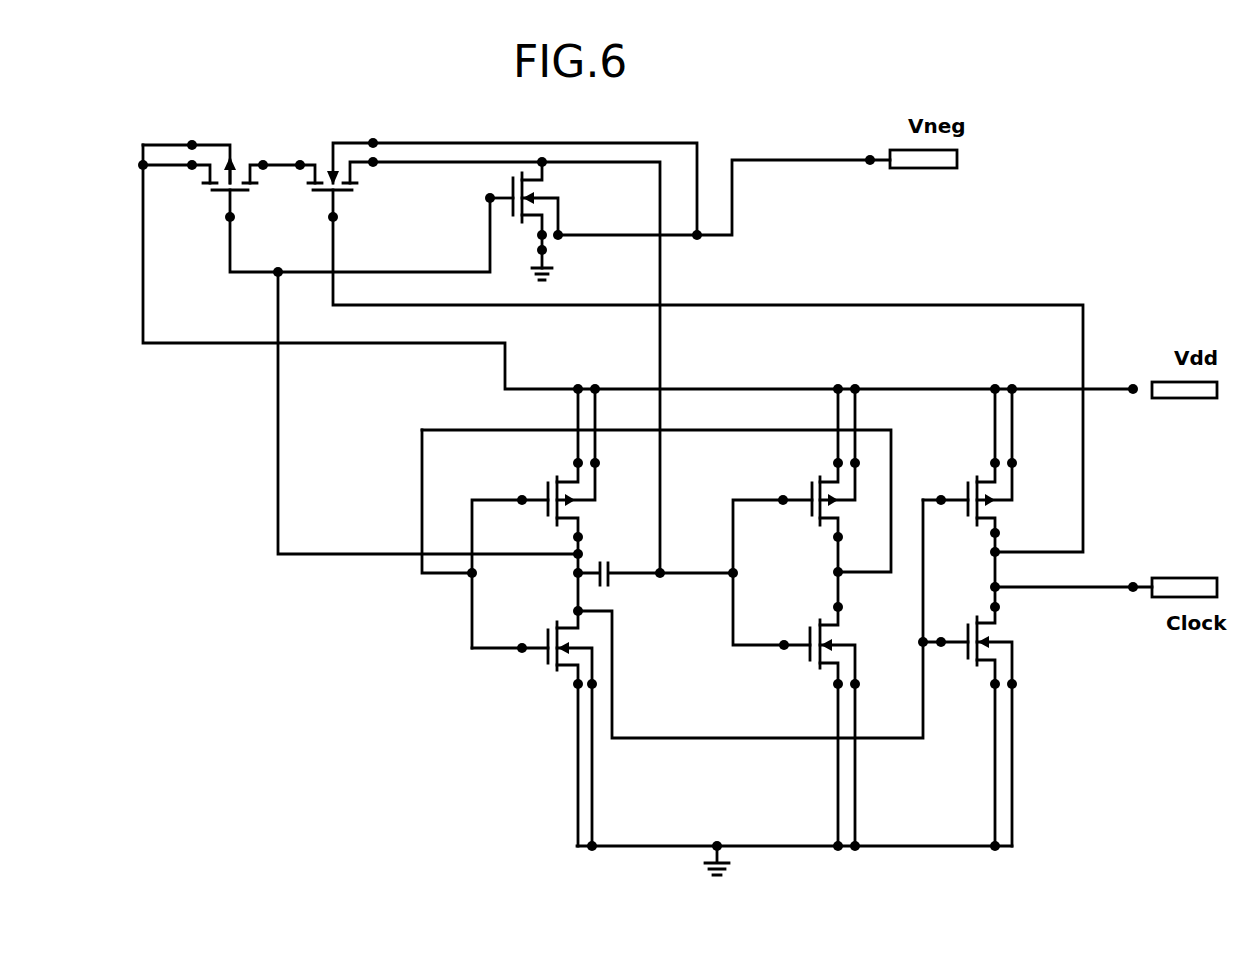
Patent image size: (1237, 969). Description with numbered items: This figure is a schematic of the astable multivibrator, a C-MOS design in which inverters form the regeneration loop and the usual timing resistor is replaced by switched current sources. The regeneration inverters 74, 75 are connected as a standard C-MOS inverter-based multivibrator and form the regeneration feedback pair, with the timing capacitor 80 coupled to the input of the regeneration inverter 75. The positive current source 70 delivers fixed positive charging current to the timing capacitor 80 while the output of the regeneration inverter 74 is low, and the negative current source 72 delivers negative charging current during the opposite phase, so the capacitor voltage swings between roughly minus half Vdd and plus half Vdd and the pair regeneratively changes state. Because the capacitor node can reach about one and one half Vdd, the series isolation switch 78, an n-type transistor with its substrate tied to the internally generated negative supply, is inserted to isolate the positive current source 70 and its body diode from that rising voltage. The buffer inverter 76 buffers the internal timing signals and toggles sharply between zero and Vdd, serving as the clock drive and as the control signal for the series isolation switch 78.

The positive transistor current source 70 is at (232, 163).
The series isolation switch 78 is at (340, 164).
The negative transistor current source 72 is at (558, 218).
The regeneration inverter 74 is at (536, 617).
The regeneration inverter 75 is at (794, 617).
The buffer inverter 76 is at (970, 617).
The timing capacitor 80 is at (655, 589).